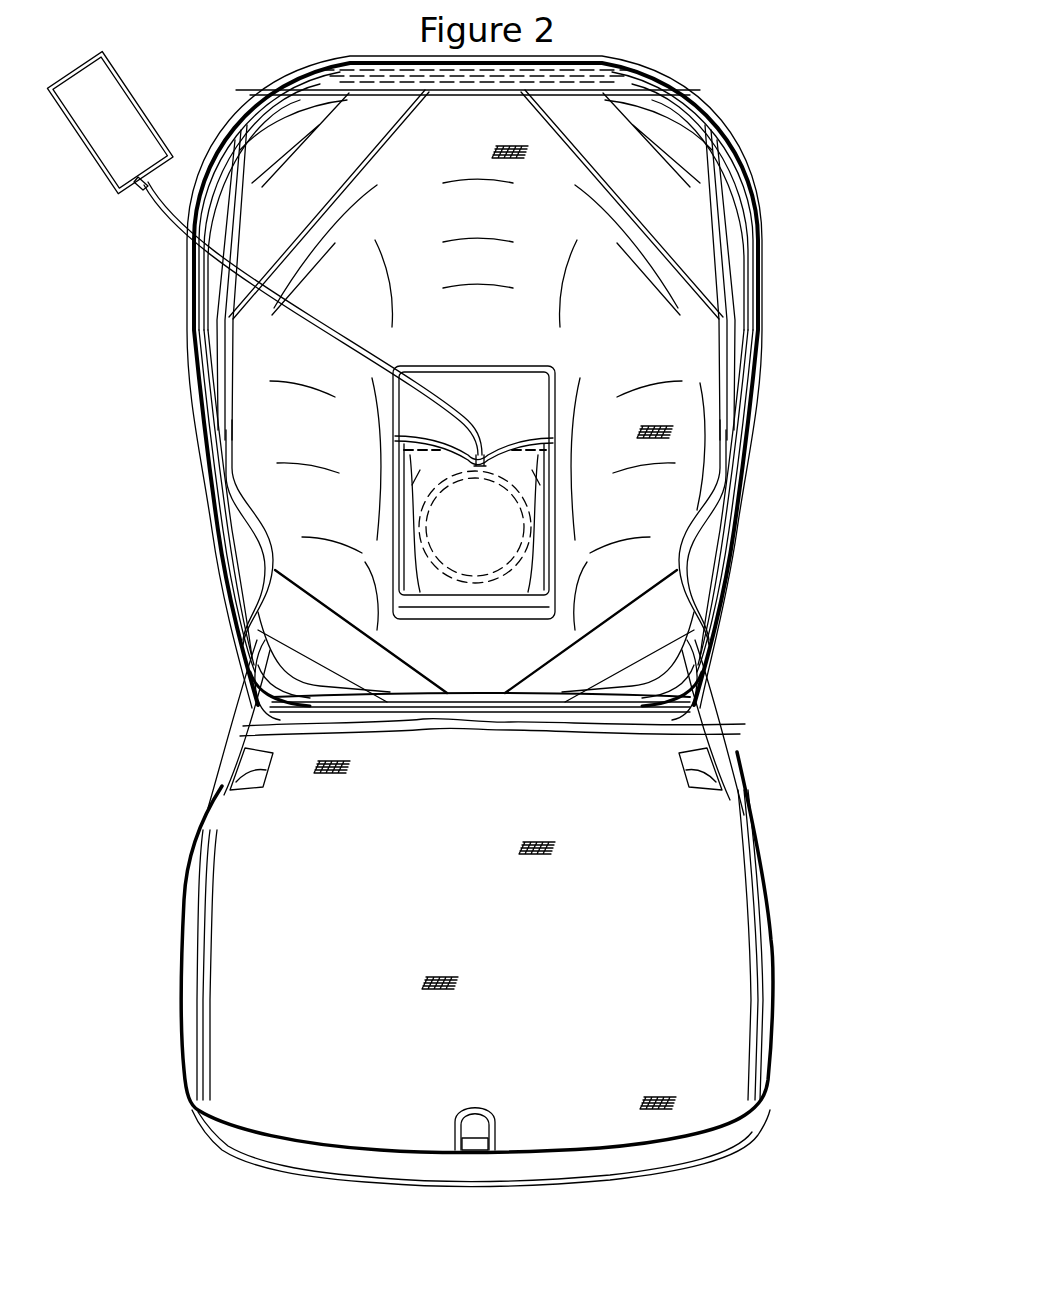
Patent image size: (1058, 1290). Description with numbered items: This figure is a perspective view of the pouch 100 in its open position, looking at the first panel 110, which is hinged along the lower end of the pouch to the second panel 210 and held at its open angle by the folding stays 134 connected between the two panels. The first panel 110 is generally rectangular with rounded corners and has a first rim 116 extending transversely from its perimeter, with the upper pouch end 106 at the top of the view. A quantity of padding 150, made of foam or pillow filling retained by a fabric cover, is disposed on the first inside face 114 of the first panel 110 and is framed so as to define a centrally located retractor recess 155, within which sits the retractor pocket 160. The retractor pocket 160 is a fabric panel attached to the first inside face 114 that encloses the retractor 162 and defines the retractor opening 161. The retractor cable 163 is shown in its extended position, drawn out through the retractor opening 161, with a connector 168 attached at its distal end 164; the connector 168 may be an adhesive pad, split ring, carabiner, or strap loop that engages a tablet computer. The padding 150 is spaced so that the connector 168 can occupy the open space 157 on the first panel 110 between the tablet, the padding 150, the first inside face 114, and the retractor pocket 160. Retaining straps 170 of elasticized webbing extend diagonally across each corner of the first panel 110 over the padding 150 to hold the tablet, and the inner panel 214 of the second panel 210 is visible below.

The pouch 100 is at (733, 91).
The upper pouch end 106 is at (625, 64).
The first panel 110 is at (728, 278).
The first inside face 114 is at (651, 668).
The first rim 116 is at (735, 404).
The folding stays 134 is at (230, 736).
The padding 150 is at (595, 356).
The retractor recess 155 is at (557, 525).
The open space 157 is at (475, 399).
The retractor pocket 160 is at (410, 468).
The retractor opening 161 is at (488, 430).
The retractor 162 is at (420, 547).
The retractor cable 163 is at (175, 241).
The distal end 164 is at (141, 186).
The connector 168 is at (126, 104).
The retaining straps 170 is at (330, 157).
The second panel 210 is at (750, 978).
The base inner panel 214 is at (712, 907).